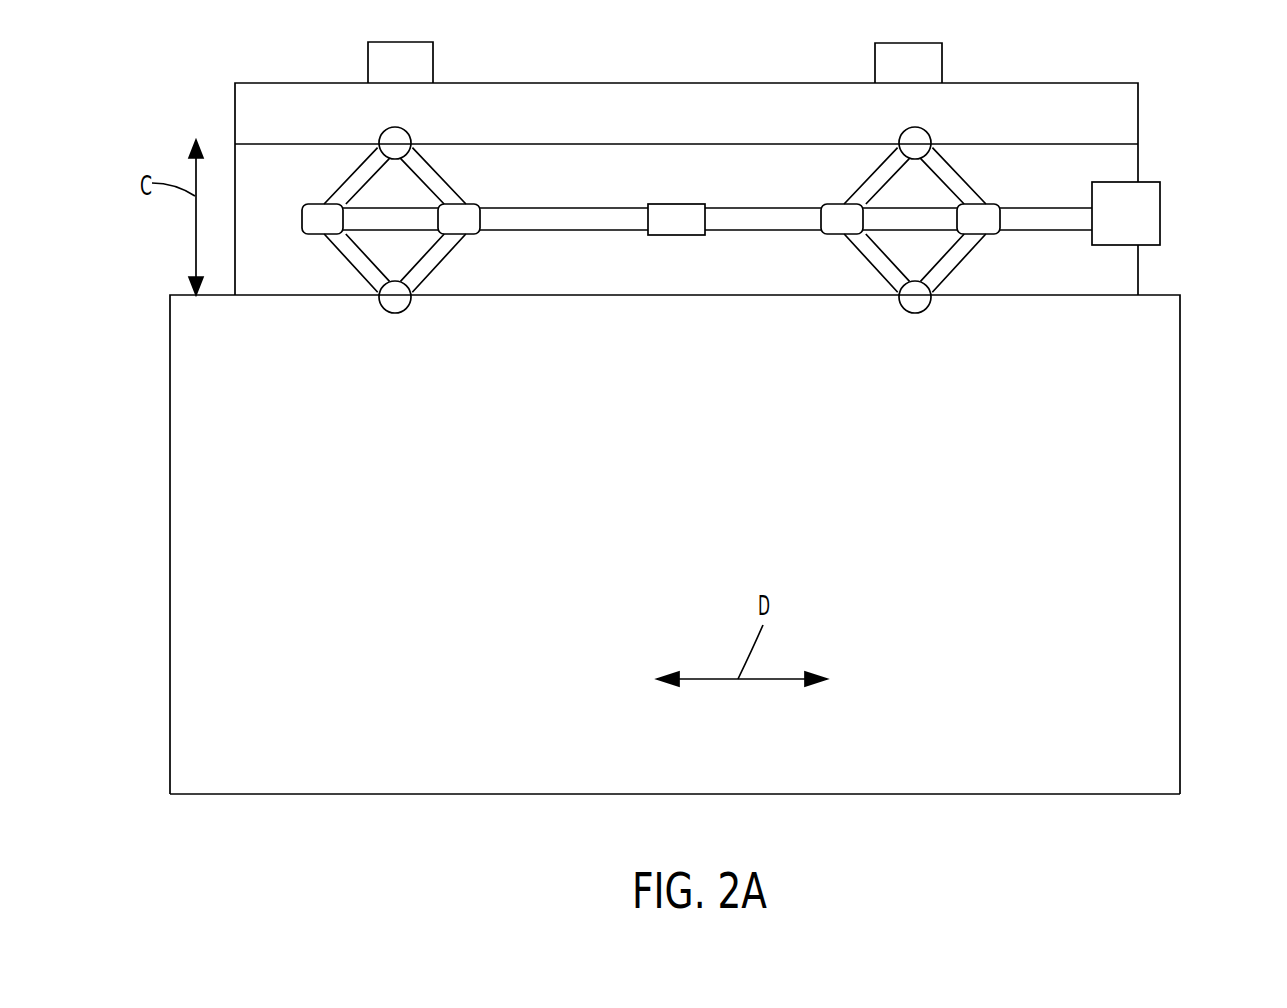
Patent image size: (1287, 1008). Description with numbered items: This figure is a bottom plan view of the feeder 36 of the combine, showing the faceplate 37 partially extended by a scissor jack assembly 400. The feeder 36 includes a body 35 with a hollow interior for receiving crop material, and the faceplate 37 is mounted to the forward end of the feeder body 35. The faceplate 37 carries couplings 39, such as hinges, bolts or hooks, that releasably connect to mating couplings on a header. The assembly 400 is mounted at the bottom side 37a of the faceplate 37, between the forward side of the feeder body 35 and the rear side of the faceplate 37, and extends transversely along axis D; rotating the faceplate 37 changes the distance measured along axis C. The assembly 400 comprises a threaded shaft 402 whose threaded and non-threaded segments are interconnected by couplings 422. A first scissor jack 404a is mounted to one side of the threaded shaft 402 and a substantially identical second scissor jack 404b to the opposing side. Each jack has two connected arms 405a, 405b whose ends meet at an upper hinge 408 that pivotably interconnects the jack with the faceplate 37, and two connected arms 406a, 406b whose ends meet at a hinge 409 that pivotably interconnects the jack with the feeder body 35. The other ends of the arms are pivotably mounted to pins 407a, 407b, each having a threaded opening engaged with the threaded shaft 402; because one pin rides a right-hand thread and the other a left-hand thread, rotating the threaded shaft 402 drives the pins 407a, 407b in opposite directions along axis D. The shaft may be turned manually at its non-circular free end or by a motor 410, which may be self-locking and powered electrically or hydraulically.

The faceplate 37 is at (260, 165).
The bottom side of faceplate 37a is at (1125, 116).
The couplings 39 is at (933, 60).
The feeder 36 is at (1165, 433).
The feeder body 35 is at (714, 597).
The scissor jack assembly 400 is at (617, 218).
The threaded shaft 402 is at (747, 218).
The couplings 422 is at (688, 218).
The motor 410 is at (1145, 222).
The first scissor jack 404a is at (354, 223).
The second scissor jack 404b is at (872, 248).
The arm 405a is at (438, 192).
The arm 405b is at (353, 167).
The arm 406a is at (433, 260).
The arm 406b is at (338, 240).
The pin 407a is at (457, 217).
The pin 407b is at (307, 222).
The upper pivot 408 is at (403, 128).
The hinge 409 is at (393, 308).